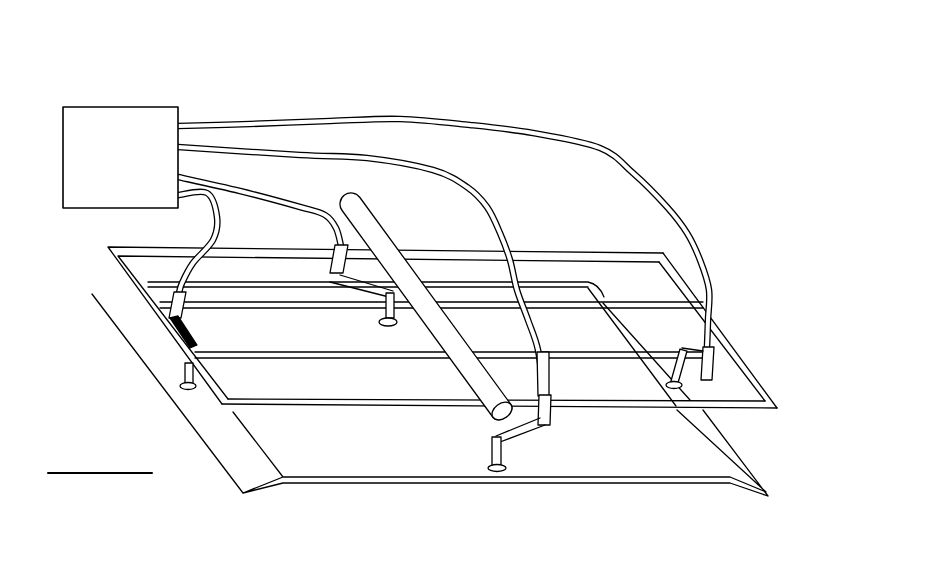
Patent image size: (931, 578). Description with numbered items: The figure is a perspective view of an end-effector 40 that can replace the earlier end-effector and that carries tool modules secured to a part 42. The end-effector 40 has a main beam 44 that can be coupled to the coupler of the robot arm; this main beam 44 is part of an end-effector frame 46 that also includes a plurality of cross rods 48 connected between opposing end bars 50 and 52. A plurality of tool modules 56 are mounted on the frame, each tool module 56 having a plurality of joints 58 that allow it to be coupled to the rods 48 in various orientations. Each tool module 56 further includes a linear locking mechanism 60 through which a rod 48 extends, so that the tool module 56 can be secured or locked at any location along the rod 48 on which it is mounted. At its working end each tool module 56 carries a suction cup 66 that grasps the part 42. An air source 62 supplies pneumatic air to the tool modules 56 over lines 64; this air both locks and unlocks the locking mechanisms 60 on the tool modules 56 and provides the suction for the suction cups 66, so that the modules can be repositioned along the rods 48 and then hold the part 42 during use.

The end-effector 40 is at (691, 153).
The part 42 is at (433, 455).
The main beam 44 is at (366, 226).
The end-effector frame 46 is at (737, 349).
The cross rods 48 is at (292, 407).
The end bar 50 is at (150, 326).
The end bar 52 is at (757, 383).
The tool module 56 is at (529, 440).
The joints 58 is at (550, 420).
The linear locking mechanism 60 is at (553, 415).
The air source 62 is at (122, 107).
The lines 64 is at (437, 118).
The suction cup 66 is at (505, 478).